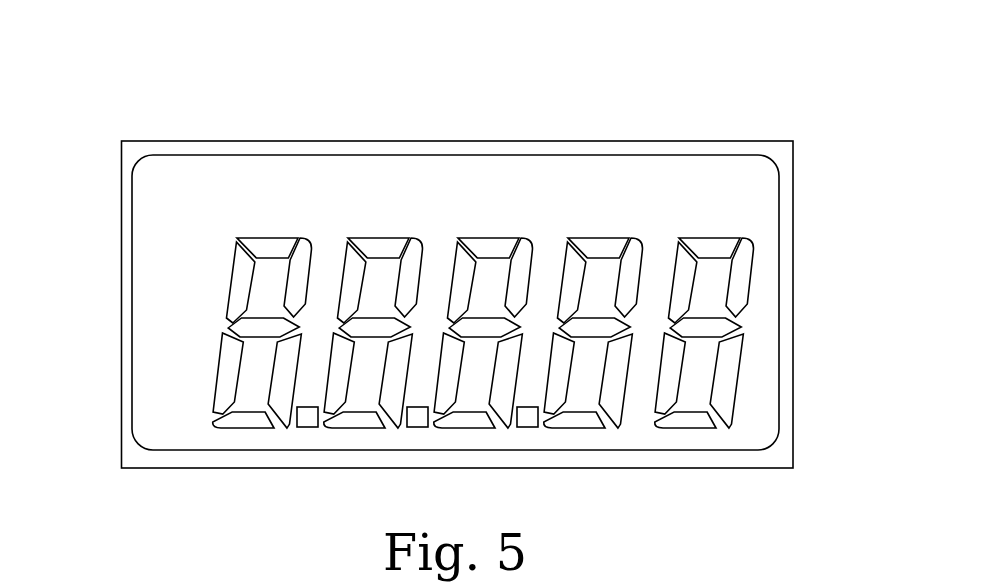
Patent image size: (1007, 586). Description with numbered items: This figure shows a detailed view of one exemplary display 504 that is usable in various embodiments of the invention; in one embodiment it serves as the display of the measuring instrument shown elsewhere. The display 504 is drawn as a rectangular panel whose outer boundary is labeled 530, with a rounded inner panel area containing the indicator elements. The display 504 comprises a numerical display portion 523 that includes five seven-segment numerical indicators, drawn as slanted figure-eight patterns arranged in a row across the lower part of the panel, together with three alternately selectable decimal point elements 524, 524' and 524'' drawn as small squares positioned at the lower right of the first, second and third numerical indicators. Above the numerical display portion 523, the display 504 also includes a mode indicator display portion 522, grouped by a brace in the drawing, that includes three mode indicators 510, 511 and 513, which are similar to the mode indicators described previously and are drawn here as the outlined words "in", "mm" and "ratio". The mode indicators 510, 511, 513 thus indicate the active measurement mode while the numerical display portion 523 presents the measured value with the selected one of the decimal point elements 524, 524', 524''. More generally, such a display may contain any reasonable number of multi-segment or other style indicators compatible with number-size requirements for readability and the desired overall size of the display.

The display 504 is at (807, 120).
The display frame / bezel 530 is at (793, 380).
The mode indicator display portion 522 is at (747, 87).
The mode indicator 510 is at (493, 177).
The mode indicator 511 is at (595, 177).
The mode indicator 513 is at (704, 177).
The numerical display portion 523 is at (210, 315).
The decimal point element 524 is at (305, 458).
The decimal point element 524' is at (417, 458).
The decimal point element 524'' is at (535, 458).